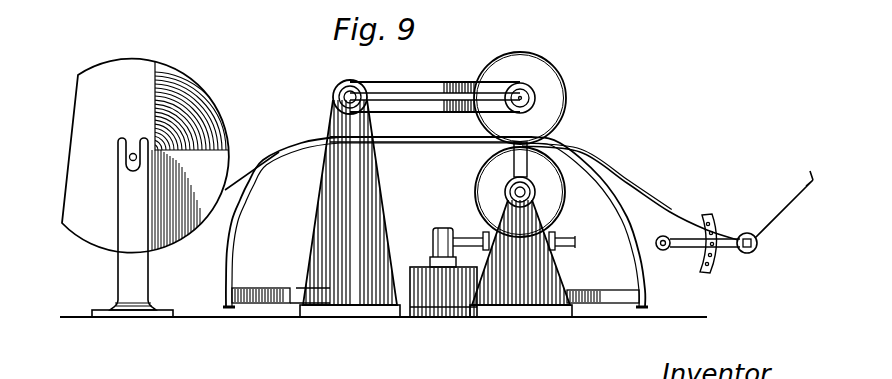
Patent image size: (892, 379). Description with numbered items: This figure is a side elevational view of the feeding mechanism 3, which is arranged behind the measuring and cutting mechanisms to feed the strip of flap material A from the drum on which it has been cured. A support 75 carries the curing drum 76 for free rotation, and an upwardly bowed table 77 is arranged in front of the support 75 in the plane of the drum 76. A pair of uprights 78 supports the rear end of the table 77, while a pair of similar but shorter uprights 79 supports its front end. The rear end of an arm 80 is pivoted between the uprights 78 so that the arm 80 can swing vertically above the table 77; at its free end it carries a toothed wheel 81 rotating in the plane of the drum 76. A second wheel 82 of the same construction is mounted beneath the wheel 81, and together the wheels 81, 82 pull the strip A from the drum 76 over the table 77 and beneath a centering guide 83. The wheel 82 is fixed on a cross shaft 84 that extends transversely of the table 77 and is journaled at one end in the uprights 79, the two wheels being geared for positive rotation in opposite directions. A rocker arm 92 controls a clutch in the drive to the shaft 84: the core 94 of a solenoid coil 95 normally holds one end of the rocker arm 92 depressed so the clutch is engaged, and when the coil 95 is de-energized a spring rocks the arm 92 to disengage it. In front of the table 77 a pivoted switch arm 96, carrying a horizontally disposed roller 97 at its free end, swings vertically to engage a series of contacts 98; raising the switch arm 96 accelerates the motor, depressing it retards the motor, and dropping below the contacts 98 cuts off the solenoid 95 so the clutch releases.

The feeding mechanism 3 is at (635, 142).
The support 75 is at (130, 280).
The curing drum 76 is at (148, 162).
The upwardly bowed table 77 is at (253, 194).
The uprights 78 is at (314, 248).
The shorter uprights 79 is at (558, 272).
The arm 80 is at (418, 81).
The toothed wheel 81 is at (545, 76).
The second wheel 82 is at (559, 165).
The centering guide 83 is at (418, 137).
The cross shaft 84 is at (505, 192).
The rocker arm 92 is at (466, 236).
The core 94 is at (432, 258).
The solenoid coil 95 is at (446, 290).
The pivoted switch arm 96 is at (682, 248).
The roller 97 is at (752, 233).
The contacts 98 is at (707, 214).
The strip of flap material A is at (278, 151).